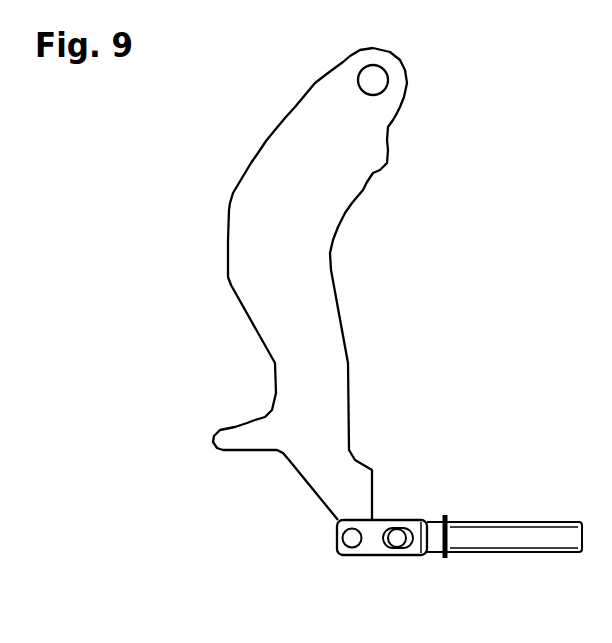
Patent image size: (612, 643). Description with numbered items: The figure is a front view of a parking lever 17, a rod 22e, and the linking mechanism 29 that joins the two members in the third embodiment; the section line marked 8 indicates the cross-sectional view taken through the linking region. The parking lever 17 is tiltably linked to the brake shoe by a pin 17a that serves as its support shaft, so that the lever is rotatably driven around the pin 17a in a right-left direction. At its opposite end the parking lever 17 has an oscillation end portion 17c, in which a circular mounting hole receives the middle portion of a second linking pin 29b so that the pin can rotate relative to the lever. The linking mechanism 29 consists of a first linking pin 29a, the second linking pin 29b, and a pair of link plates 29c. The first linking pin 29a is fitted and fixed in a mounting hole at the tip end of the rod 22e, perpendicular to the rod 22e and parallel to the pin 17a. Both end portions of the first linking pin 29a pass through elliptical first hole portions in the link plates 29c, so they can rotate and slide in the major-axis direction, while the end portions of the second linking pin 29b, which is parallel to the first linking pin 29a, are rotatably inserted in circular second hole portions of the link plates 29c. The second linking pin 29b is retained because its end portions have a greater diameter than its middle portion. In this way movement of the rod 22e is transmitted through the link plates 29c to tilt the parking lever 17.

The parking lever 17 is at (327, 278).
The pin 17a is at (386, 82).
The oscillation end portion 17c is at (335, 557).
The linking mechanism 29 is at (380, 518).
The first linking pin 29a is at (398, 540).
The second linking pin 29b is at (352, 540).
The link plates 29c is at (415, 555).
The rod 22e is at (548, 532).
The section line VIII-VIII 8 is at (323, 540).